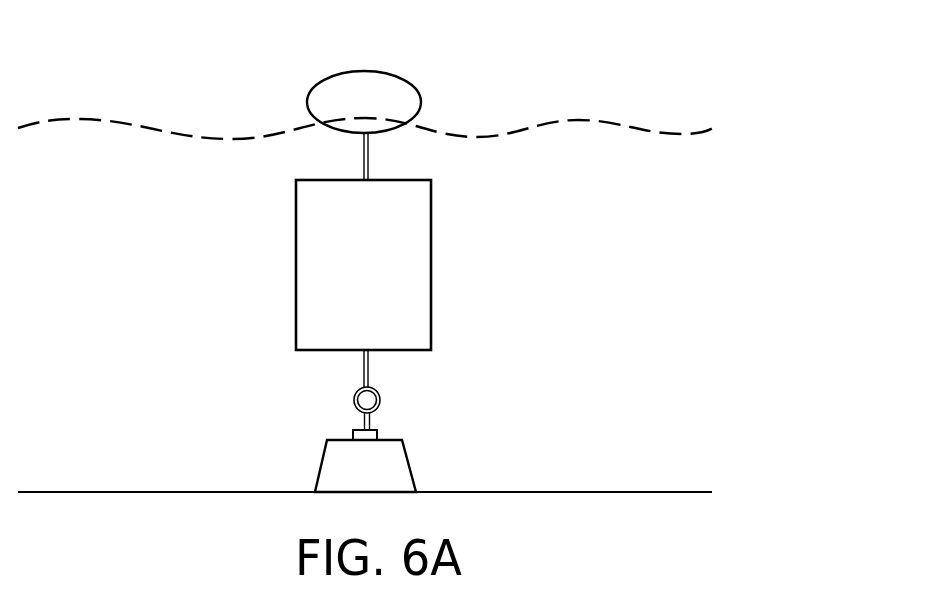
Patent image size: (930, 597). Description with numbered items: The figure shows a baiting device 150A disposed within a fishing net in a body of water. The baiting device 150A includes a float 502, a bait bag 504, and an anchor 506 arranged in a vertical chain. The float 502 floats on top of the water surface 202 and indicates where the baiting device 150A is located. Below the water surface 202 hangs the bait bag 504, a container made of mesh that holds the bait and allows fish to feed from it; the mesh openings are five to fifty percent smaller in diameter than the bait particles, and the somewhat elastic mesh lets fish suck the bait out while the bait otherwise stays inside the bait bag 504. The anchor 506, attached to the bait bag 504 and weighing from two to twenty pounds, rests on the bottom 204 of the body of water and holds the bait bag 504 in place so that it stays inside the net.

The baiting device 150A is at (233, 267).
The water surface 202 is at (572, 121).
The bottom 204 is at (118, 492).
The float 502 is at (370, 71).
The bait bag 504 is at (424, 282).
The anchor 506 is at (398, 472).